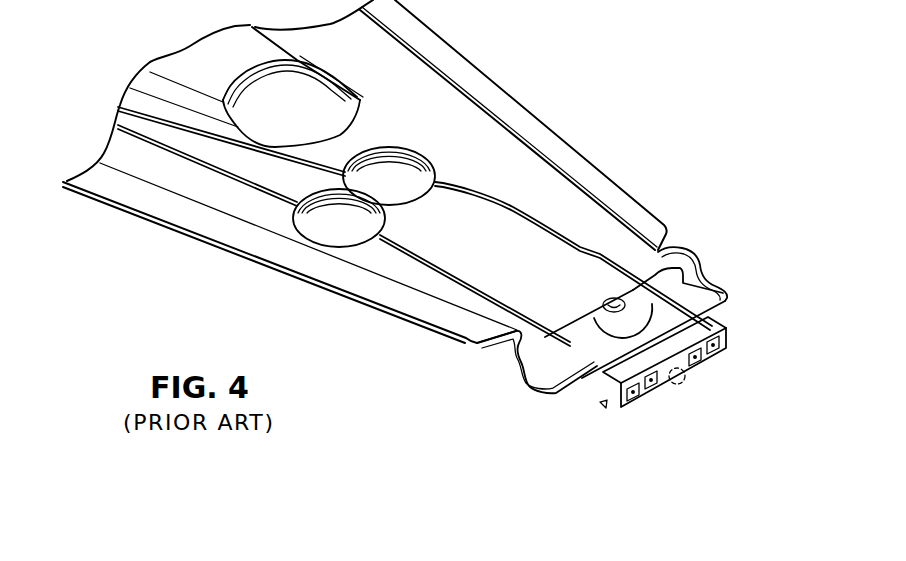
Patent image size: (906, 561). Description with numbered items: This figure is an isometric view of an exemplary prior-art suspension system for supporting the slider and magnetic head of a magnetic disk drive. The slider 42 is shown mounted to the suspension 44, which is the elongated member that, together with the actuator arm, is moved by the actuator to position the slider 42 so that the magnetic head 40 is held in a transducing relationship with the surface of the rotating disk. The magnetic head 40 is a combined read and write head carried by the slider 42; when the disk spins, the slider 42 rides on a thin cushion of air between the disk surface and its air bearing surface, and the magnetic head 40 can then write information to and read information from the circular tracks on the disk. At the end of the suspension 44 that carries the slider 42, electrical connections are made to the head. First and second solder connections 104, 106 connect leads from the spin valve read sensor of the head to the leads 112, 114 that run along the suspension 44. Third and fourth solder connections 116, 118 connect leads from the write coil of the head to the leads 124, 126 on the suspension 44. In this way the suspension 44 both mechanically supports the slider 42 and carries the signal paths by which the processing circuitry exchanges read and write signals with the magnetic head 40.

The suspension 44 is at (534, 109).
The lead 114 is at (588, 243).
The lead 126 is at (510, 209).
The lead 124 is at (453, 276).
The lead 112 is at (405, 254).
The slider 42 is at (573, 399).
The first solder connection 104 is at (627, 400).
The third solder connection 116 is at (653, 392).
The fourth solder connection 118 is at (700, 362).
The second solder connection 106 is at (720, 347).
The magnetic head 40 is at (683, 385).